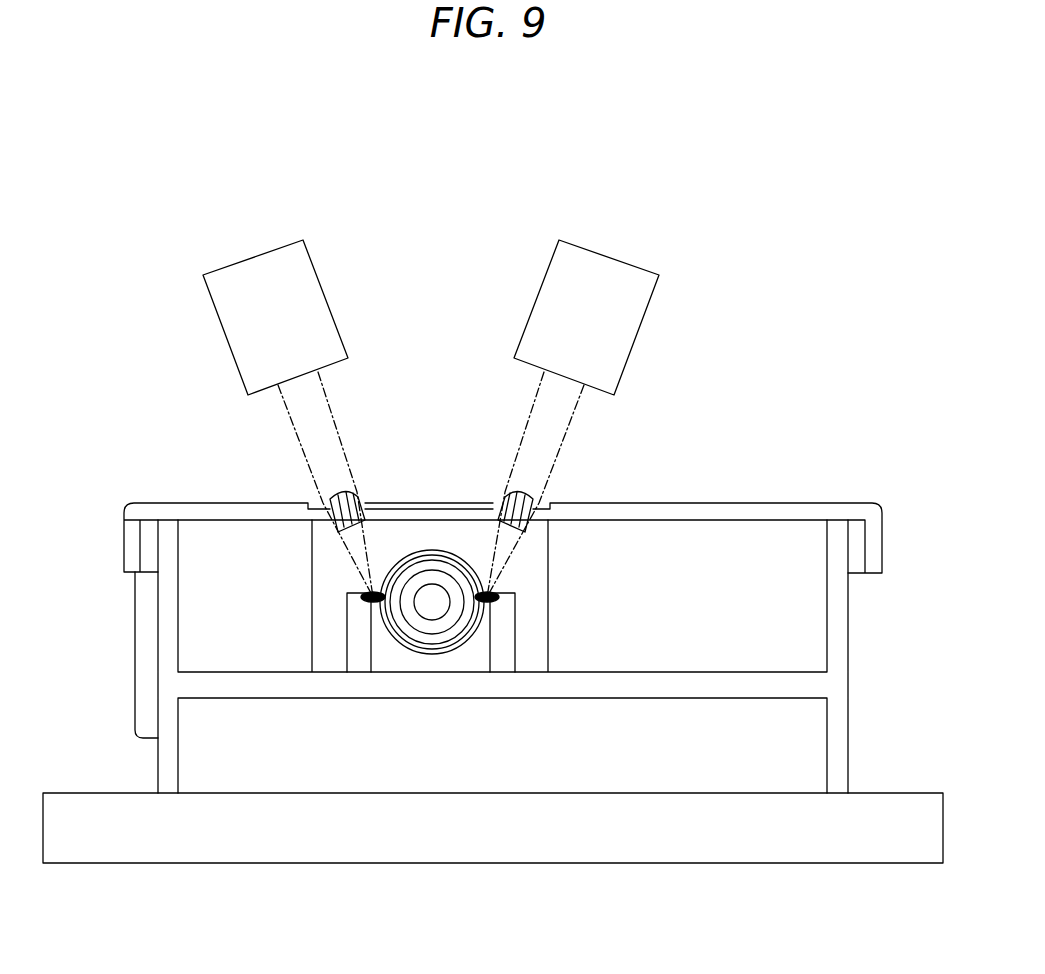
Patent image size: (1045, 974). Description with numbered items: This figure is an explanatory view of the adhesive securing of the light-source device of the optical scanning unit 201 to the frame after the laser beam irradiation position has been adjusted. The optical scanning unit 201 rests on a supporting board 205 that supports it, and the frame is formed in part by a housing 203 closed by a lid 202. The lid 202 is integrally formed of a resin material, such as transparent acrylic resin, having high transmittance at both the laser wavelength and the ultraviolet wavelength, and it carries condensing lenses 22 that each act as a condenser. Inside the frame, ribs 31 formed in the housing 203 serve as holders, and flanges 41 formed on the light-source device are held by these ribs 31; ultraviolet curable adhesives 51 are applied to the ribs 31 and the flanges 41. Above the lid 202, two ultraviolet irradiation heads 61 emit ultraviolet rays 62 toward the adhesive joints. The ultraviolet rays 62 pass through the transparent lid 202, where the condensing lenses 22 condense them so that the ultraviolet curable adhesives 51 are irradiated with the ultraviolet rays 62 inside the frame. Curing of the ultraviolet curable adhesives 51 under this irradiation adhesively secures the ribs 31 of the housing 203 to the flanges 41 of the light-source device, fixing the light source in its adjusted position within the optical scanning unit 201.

The optical scanning unit 201 is at (139, 142).
The lid 202 is at (195, 512).
The housing 203 is at (173, 685).
The supporting board 205 is at (117, 830).
The condensing lens 22 is at (493, 522).
The rib 31 is at (357, 610).
The flange 41 is at (382, 604).
The ultraviolet curable adhesive 51 is at (375, 600).
The ultraviolet irradiation head 61 is at (558, 293).
The ultraviolet ray 62 is at (538, 452).